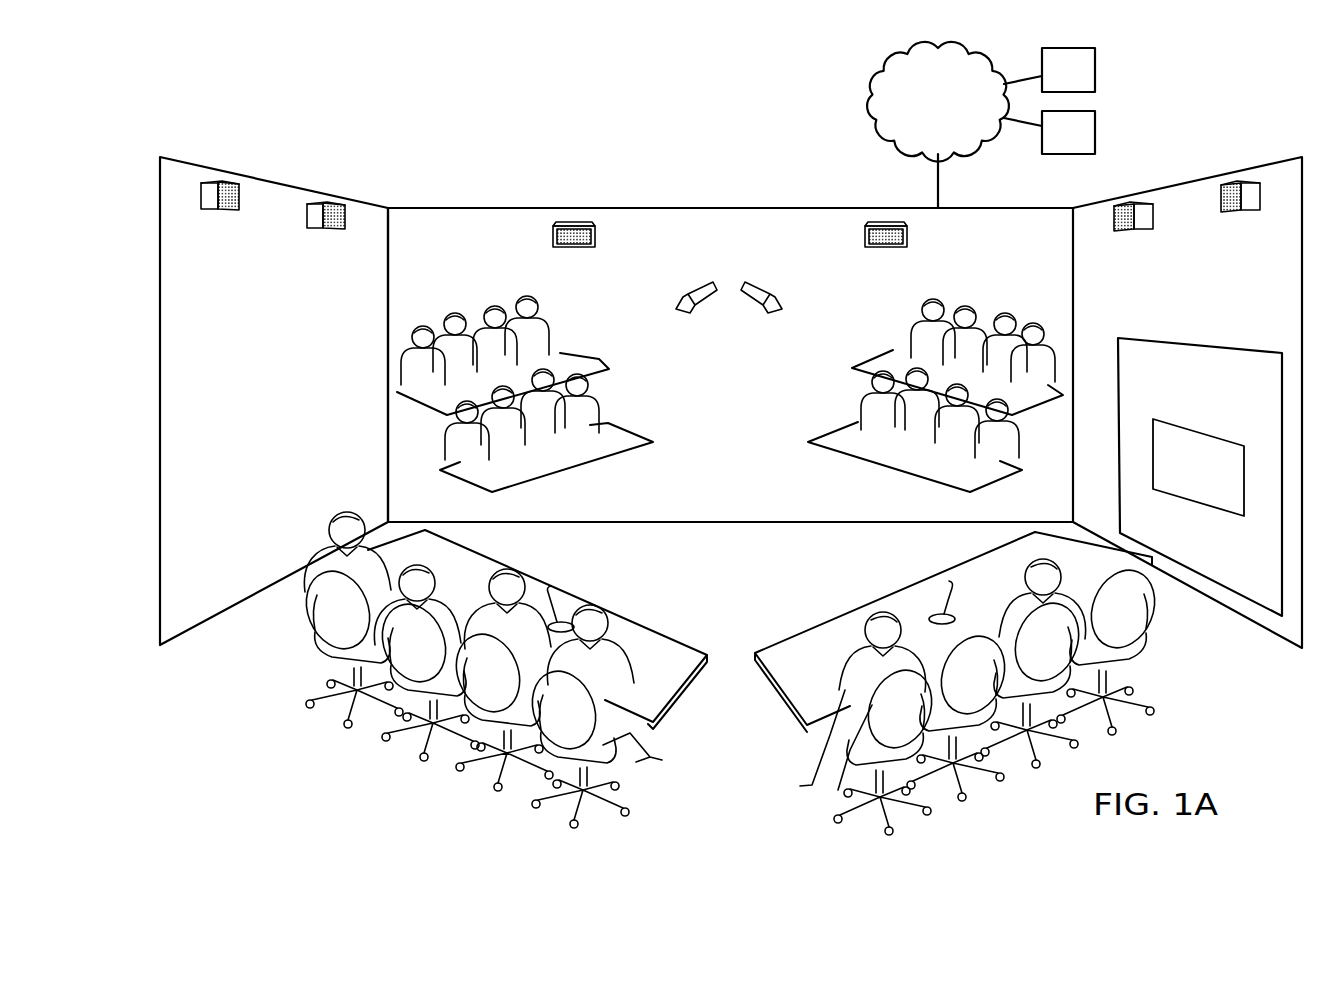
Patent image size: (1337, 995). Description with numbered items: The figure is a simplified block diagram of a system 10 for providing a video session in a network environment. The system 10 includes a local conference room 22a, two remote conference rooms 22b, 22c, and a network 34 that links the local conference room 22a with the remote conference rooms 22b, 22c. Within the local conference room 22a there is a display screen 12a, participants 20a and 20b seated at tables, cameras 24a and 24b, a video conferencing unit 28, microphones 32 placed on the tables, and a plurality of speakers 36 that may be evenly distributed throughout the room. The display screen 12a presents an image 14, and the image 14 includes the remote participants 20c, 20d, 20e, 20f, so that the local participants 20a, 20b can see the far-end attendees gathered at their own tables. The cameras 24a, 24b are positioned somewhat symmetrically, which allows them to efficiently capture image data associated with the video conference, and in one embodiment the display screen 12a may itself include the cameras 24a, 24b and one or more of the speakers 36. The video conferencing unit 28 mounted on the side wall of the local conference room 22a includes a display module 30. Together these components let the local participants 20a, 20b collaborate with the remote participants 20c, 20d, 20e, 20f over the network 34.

The system 10 is at (506, 163).
The display screen 12a is at (730, 207).
The image 14 is at (718, 380).
The participant 20a is at (656, 605).
The participant 20b is at (806, 603).
The participant 20c is at (607, 400).
The participant 20d is at (857, 401).
The participant 20e is at (449, 303).
The participant 20f is at (1011, 300).
The local conference room 22a is at (273, 180).
The remote conference room 22b is at (1097, 65).
The remote conference room 22c is at (1097, 129).
The camera 24a is at (677, 293).
The camera 24b is at (781, 293).
The video conferencing unit 28 is at (1211, 343).
The display module 30 is at (1191, 498).
The microphone 32 is at (553, 588).
The network 34 is at (872, 87).
The speaker 36 is at (226, 181).